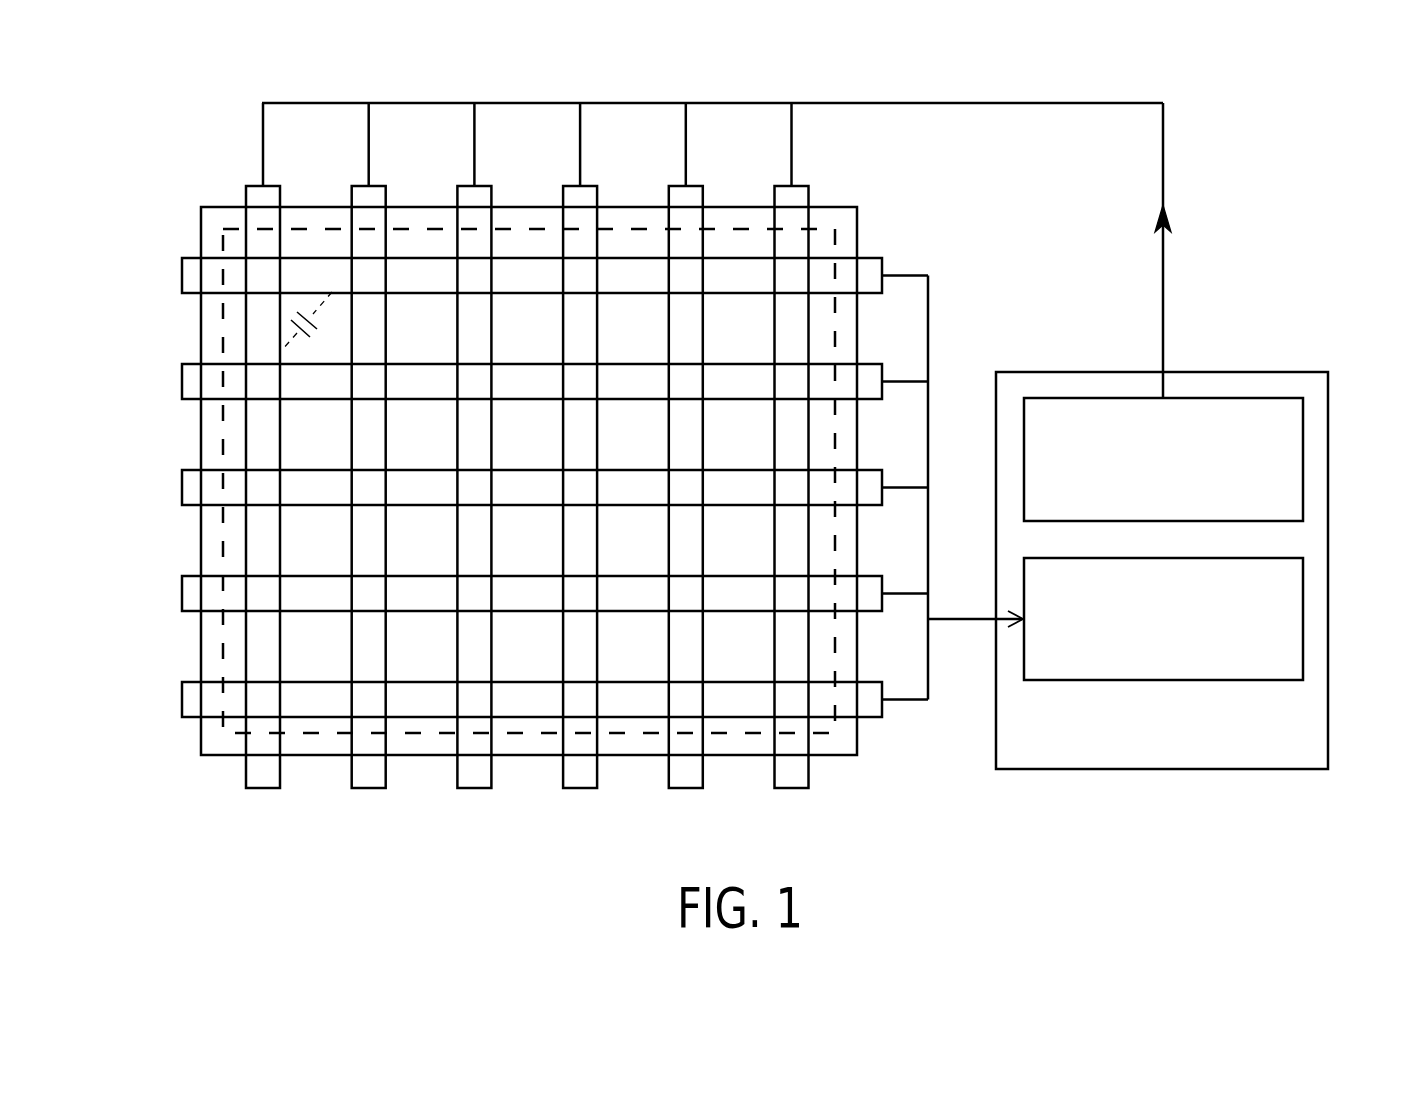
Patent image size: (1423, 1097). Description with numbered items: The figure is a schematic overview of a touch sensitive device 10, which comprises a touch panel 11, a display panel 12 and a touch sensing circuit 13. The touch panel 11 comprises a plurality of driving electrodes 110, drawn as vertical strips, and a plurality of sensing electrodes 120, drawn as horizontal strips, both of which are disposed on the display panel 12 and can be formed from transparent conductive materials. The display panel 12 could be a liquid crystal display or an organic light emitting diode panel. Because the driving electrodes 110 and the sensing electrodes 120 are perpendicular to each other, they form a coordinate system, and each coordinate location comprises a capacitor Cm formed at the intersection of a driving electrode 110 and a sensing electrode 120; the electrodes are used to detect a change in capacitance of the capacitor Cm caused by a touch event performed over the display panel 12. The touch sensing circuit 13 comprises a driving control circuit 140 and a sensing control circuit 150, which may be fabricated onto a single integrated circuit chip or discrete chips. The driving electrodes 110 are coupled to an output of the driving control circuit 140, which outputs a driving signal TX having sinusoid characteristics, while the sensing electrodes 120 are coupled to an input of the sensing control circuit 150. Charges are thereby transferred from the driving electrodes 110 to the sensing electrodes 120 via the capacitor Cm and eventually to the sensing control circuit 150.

The touch sensitive device 10 is at (1322, 124).
The touch panel 11 is at (233, 228).
The display panel 12 is at (217, 757).
The touch sensing circuit 13 is at (1302, 368).
The driving electrodes 110 is at (262, 788).
The sensing electrodes 120 is at (182, 272).
The driving control circuit 140 is at (1303, 456).
The sensing control circuit 150 is at (1303, 617).
The capacitor Cm is at (311, 329).